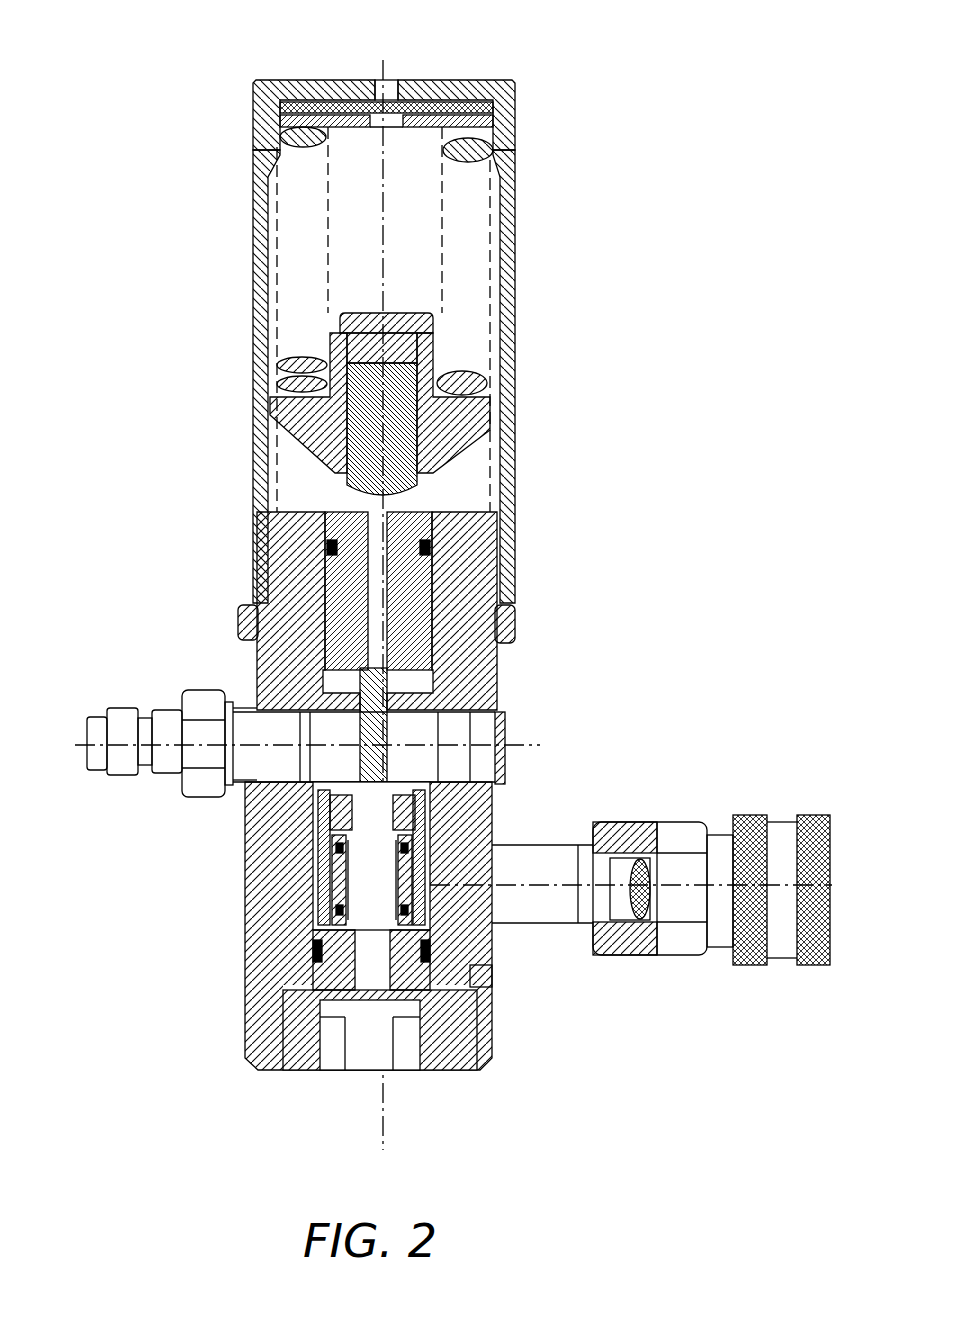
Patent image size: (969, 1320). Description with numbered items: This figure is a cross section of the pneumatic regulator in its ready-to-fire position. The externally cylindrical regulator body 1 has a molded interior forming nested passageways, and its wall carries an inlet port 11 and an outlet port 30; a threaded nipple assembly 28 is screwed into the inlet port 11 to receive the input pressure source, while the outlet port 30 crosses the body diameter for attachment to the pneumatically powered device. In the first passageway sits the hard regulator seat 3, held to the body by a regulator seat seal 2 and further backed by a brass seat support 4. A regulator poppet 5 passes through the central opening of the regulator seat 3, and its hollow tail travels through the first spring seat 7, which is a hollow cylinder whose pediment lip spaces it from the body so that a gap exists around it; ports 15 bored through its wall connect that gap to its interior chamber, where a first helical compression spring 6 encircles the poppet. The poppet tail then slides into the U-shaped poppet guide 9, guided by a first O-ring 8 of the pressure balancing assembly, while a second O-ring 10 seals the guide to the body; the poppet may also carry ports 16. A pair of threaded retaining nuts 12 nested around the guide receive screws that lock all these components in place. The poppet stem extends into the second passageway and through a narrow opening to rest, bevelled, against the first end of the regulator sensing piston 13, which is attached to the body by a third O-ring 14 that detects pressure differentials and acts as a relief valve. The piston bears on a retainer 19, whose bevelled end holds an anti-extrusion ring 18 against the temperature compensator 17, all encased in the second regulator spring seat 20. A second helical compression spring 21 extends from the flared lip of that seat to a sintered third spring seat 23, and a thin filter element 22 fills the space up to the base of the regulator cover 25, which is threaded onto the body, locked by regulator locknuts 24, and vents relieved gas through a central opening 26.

The regulator body 1 is at (245, 1045).
The regulator seat seal 2 is at (390, 705).
The regulator seat 3 is at (497, 712).
The seat support 4 is at (320, 813).
The regulator poppet 5 is at (357, 747).
The first helical compression spring 6 is at (320, 848).
The first spring seat 7 is at (315, 917).
The first O-ring 8 is at (307, 987).
The poppet guide 9 is at (360, 1017).
The second O-ring 10 is at (490, 973).
The inlet port 11 is at (527, 847).
The threaded retaining nuts 12 is at (438, 1072).
The regulator sensing piston 13 is at (259, 596).
The third O-ring 14 is at (324, 546).
The port 15 is at (435, 952).
The poppet ports 16 is at (503, 763).
The temperature compensator 17 is at (341, 361).
The anti-extrusion ring 18 is at (341, 367).
The retainer 19 is at (337, 402).
The second regulator spring seat 20 is at (433, 318).
The second helical compression spring 21 is at (276, 221).
The filter element 22 is at (515, 107).
The third spring seat 23 is at (273, 118).
The regulator locknuts 24 is at (515, 623).
The regulator cover 25 is at (517, 153).
The opening 26 is at (385, 82).
The nipple assembly 28 is at (500, 843).
The outlet port 30 is at (262, 713).